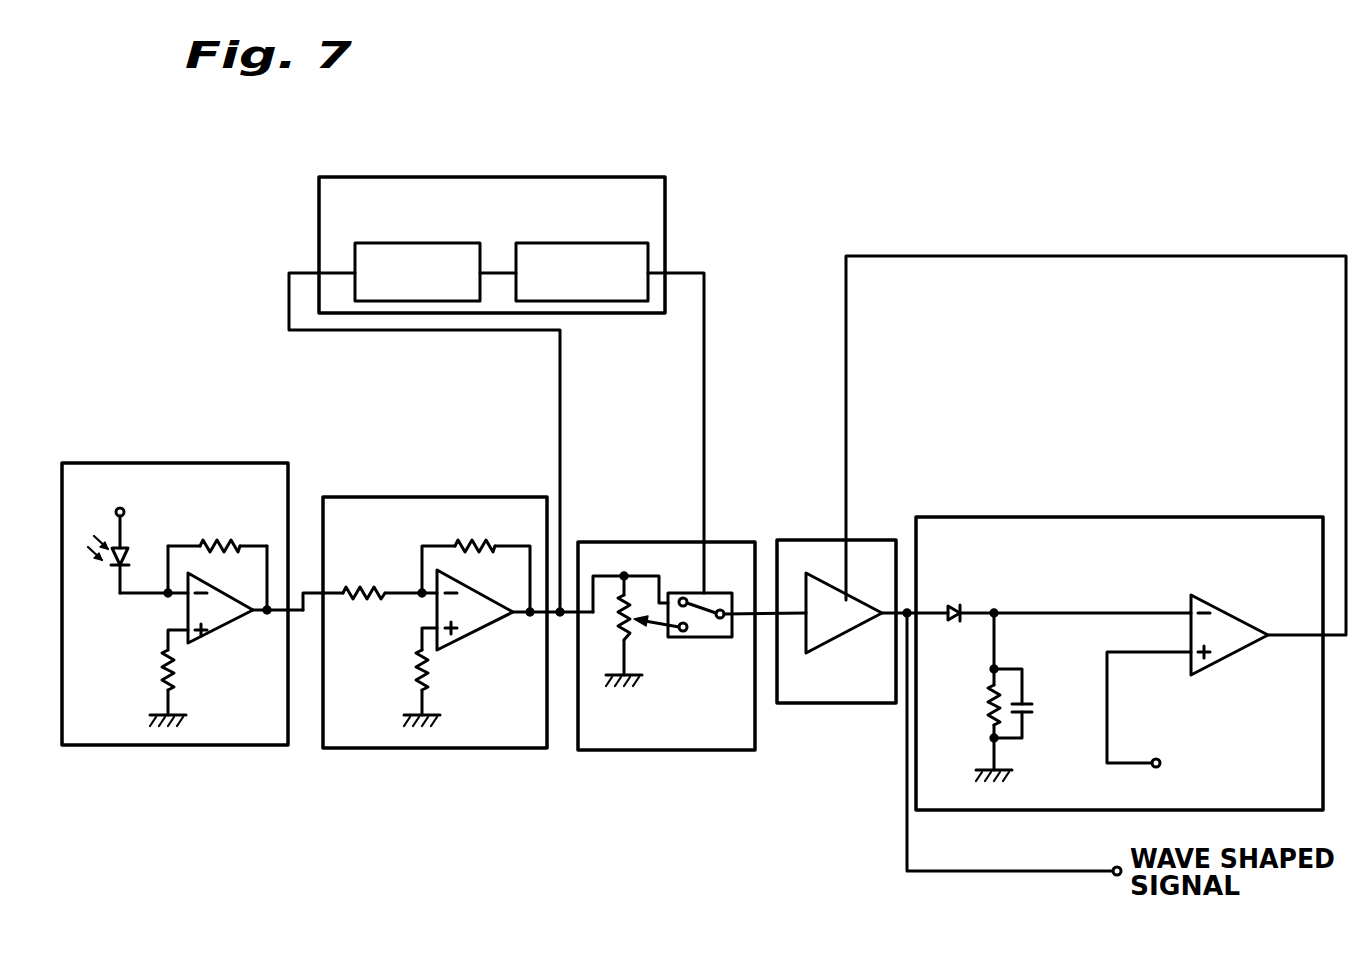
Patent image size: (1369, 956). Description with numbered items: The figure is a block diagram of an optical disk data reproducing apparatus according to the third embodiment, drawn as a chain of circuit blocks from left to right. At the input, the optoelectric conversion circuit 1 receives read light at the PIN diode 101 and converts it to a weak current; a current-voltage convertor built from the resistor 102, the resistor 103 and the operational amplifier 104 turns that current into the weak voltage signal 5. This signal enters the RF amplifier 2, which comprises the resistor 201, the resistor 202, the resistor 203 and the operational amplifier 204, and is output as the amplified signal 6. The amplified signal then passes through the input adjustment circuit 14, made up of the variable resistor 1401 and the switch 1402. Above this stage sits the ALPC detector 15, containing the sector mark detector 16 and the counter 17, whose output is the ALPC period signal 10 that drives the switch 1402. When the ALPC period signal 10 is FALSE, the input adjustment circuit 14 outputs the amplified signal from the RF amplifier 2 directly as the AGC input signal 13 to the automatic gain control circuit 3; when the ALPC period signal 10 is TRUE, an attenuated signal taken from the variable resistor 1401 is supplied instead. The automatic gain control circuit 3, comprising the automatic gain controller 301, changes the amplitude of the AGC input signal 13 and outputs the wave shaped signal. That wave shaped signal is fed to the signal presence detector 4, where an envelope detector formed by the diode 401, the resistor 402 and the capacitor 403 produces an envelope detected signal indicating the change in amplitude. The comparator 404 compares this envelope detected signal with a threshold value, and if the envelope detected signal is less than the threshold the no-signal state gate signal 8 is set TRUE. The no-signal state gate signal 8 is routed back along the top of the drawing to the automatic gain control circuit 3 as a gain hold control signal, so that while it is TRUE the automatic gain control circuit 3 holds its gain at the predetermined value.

The optoelectric conversion circuit 1 is at (182, 551).
The RF amplifier 2 is at (458, 582).
The automatic gain control circuit 3 is at (871, 561).
The signal presence detector 4 is at (1113, 585).
The weak voltage signal 5 is at (307, 616).
The amplified signal 6 is at (565, 617).
The no-signal state gate signal 8 is at (962, 256).
The ALPC period signal 10 is at (690, 273).
The AGC input signal 13 is at (770, 618).
The input adjustment circuit 14 is at (661, 582).
The ALPC detector 15 is at (477, 354).
The sector mark detector 16 is at (405, 243).
The counter 17 is at (555, 243).
The PIN diode 101 is at (116, 566).
The resistor 102 is at (160, 660).
The resistor 103 is at (220, 542).
The operational amplifier 104 is at (218, 626).
The resistor 201 is at (362, 598).
The resistor 202 is at (418, 660).
The resistor 203 is at (470, 541).
The operational amplifier 204 is at (478, 640).
The automatic gain controller 301 is at (838, 648).
The diode 401 is at (955, 605).
The resistor 402 is at (990, 708).
The capacitor 403 is at (1025, 703).
The comparator 404 is at (1232, 617).
The variable resistor 1401 is at (636, 628).
The switch 1402 is at (690, 638).